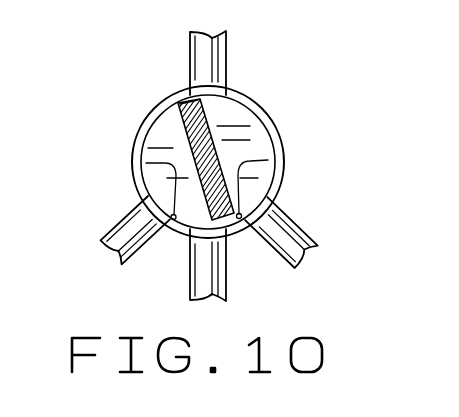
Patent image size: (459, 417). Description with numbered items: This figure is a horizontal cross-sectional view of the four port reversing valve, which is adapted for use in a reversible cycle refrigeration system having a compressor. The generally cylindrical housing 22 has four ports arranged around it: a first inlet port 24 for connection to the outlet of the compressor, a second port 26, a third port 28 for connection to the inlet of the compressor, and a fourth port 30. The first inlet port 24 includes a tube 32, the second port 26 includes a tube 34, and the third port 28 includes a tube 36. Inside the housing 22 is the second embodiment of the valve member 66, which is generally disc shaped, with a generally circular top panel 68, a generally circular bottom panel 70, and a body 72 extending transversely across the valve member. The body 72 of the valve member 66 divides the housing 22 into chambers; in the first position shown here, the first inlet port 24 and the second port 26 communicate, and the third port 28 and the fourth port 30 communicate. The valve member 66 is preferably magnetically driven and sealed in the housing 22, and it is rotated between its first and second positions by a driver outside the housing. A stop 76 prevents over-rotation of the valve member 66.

The housing 22 is at (262, 108).
The first inlet port 24 is at (234, 274).
The second port 26 is at (98, 229).
The third port 28 is at (178, 59).
The fourth port 30 is at (302, 196).
The tube 32 is at (198, 263).
The tube 34 is at (130, 222).
The tube 36 is at (218, 60).
The valve member 66 is at (226, 166).
The top panel 68 is at (268, 160).
The bottom panel 70 is at (160, 137).
The body 72 is at (178, 100).
The stop 76 is at (186, 161).